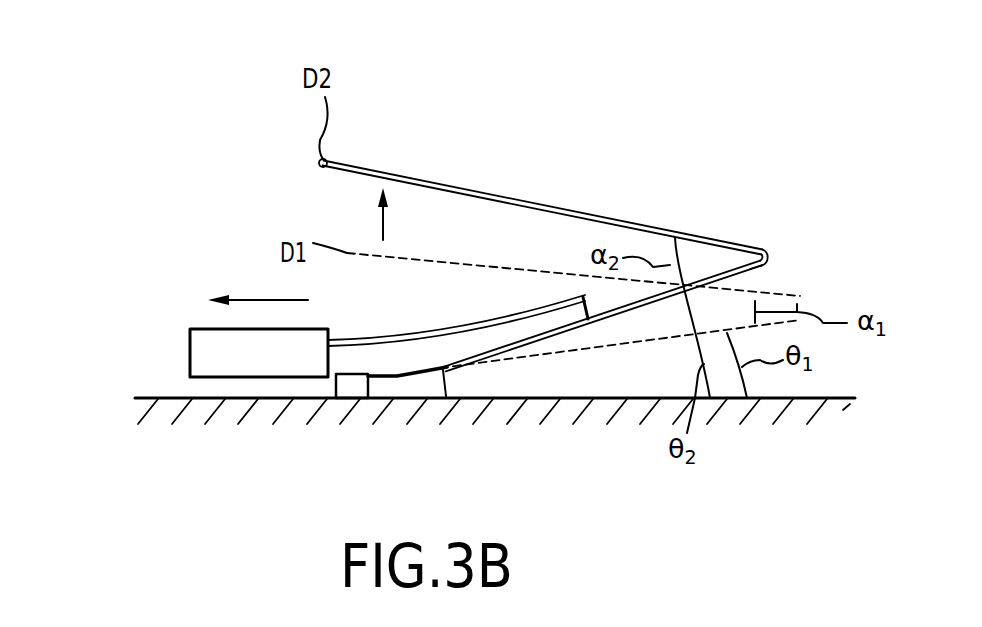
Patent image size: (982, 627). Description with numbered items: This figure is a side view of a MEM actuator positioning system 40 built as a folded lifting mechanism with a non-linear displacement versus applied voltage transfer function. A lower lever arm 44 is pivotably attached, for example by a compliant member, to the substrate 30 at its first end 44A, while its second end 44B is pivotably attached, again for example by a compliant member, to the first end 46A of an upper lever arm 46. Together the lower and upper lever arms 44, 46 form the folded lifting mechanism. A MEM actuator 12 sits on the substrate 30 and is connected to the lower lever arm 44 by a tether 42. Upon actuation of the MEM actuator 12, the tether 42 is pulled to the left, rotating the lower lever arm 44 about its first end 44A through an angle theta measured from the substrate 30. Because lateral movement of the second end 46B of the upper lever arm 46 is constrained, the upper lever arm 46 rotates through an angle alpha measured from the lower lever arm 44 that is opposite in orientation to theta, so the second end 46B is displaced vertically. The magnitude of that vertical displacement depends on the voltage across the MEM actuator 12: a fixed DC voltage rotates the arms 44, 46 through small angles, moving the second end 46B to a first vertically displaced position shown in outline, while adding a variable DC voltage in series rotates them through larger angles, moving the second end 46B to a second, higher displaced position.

The MEM actuator 12 is at (190, 340).
The substrate 30 is at (150, 398).
The folded lifting mechanism positioning system 40 is at (553, 150).
The tether 42 is at (443, 330).
The lower lever arm 44 is at (608, 341).
The first end of the lower lever arm 44A is at (446, 380).
The second end of the lower lever arm 44B is at (763, 270).
The upper lever arm 46 is at (549, 209).
The first end of the upper lever arm 46A is at (763, 251).
The second end of the upper lever arm 46B is at (320, 168).